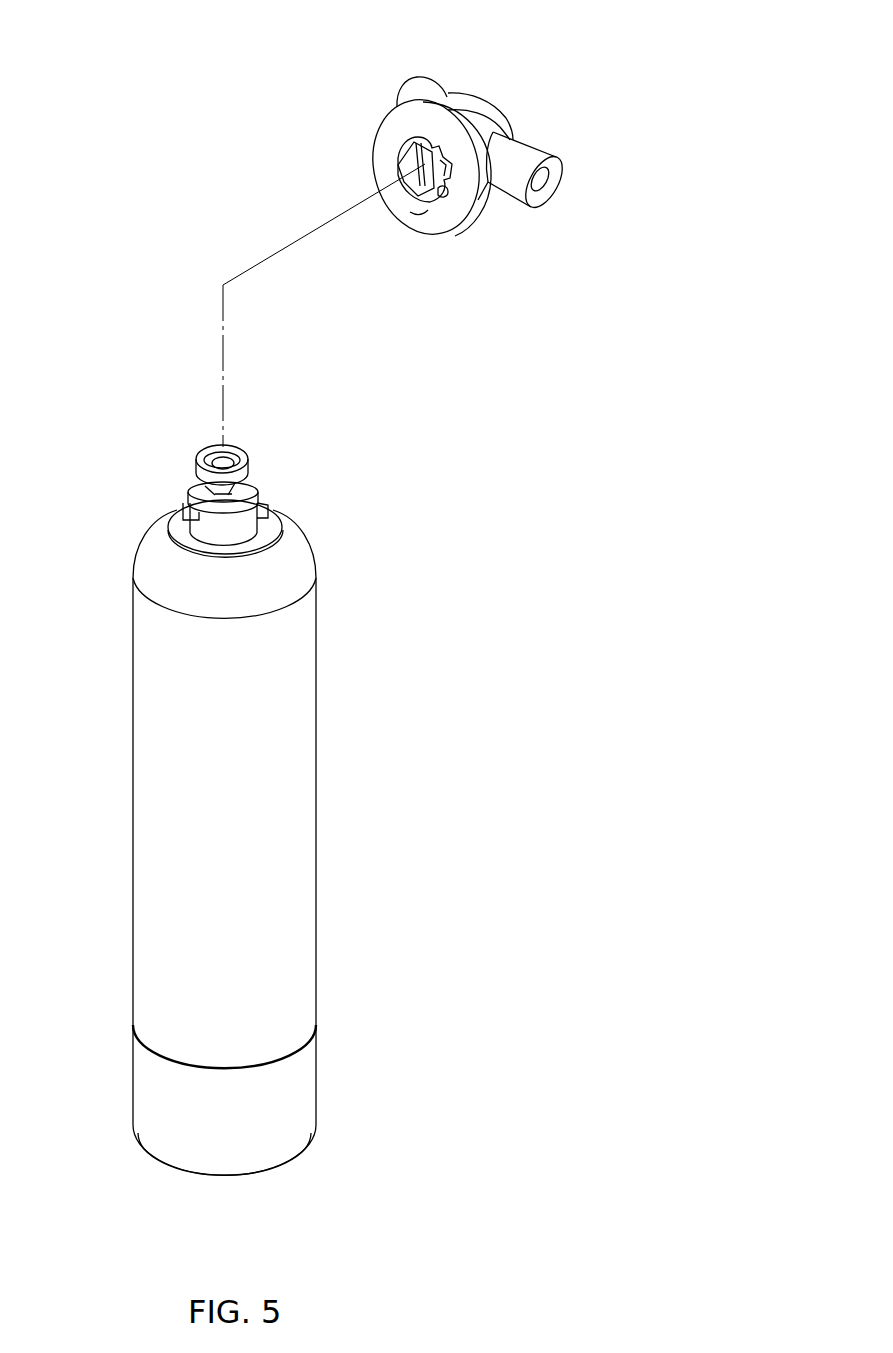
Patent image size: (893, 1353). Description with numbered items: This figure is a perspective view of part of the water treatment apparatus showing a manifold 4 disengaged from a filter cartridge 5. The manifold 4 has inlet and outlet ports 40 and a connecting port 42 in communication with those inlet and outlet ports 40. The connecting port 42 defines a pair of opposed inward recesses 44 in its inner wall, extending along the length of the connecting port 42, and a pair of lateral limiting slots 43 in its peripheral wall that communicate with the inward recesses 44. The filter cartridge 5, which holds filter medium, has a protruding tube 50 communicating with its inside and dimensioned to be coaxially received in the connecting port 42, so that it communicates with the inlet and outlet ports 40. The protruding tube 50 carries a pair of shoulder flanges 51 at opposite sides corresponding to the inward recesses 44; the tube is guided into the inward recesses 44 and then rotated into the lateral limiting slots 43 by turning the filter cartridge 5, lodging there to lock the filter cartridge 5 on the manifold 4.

The manifold 4 is at (495, 96).
The inlet and outlet ports 40 is at (438, 90).
The connecting port 42 is at (432, 208).
The lateral limiting slots 43 is at (415, 155).
The inward recesses 44 is at (412, 220).
The filter cartridge 5 is at (285, 913).
The protruding tube 50 is at (252, 470).
The shoulder flanges 51 is at (260, 503).